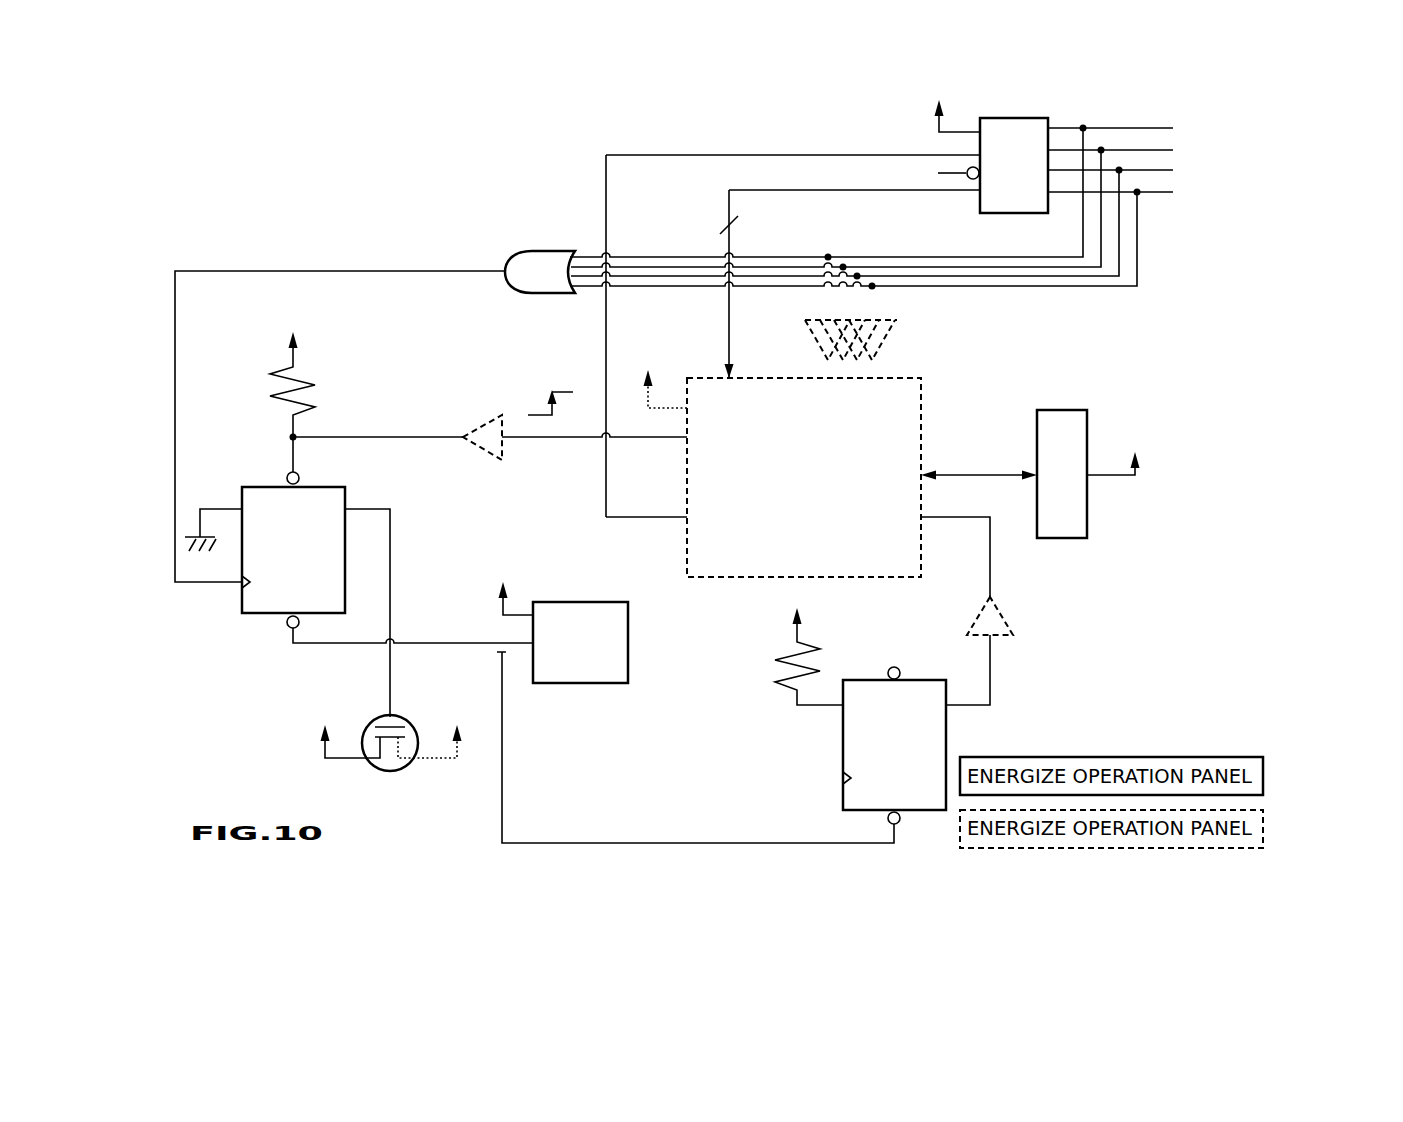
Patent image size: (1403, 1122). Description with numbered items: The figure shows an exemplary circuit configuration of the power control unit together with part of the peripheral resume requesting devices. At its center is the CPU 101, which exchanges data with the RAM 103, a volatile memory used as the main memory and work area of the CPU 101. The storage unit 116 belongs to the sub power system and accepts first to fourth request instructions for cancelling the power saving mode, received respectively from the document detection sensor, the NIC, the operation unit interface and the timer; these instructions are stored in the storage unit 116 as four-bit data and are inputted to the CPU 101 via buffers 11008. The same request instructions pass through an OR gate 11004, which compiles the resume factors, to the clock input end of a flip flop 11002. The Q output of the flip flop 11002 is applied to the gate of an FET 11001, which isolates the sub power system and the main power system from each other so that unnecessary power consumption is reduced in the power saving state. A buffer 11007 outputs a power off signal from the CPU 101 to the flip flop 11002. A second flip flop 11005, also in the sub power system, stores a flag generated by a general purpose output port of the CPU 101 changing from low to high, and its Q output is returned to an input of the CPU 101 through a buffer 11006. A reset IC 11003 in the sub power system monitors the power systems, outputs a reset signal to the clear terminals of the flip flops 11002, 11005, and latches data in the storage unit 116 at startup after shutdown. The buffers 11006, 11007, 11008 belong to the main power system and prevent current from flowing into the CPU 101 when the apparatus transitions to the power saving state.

The CPU 101 is at (921, 410).
The RAM 103 is at (1055, 410).
The storage unit 116 is at (1030, 118).
The FET 11001 is at (393, 771).
The flip flop 11002 is at (245, 487).
The reset IC 11003 is at (583, 602).
The OR gate 11004 is at (540, 252).
The flip flop 11005 is at (946, 722).
The buffer 11006 is at (1000, 607).
The buffer 11007 is at (487, 415).
The buffers 11008 is at (897, 320).